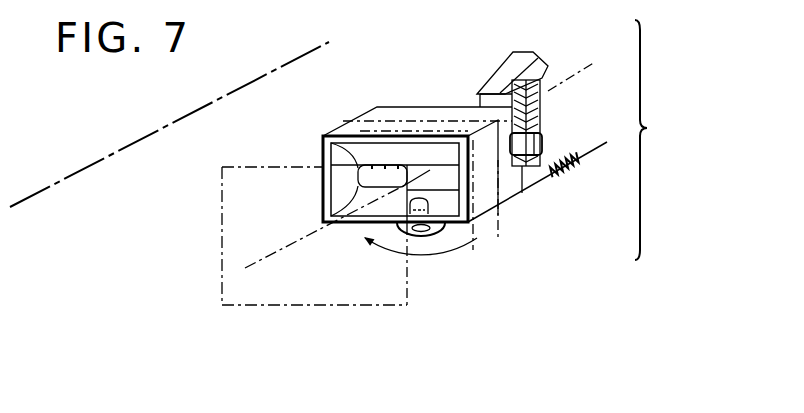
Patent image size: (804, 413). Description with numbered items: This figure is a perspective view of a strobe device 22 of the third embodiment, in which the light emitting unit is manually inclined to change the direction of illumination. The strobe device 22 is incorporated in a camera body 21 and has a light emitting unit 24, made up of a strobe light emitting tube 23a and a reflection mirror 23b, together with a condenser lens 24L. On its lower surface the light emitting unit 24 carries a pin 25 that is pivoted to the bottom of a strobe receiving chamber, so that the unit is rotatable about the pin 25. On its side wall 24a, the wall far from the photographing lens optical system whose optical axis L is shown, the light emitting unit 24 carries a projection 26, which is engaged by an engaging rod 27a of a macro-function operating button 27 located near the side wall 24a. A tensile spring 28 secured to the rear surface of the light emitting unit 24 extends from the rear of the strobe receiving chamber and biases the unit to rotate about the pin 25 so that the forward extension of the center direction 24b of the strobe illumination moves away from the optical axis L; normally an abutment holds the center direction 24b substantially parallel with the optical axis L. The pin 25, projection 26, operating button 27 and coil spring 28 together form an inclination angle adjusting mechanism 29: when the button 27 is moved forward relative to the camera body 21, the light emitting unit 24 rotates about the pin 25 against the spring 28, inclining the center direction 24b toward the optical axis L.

The optical axis L is at (35, 195).
The camera body 21 is at (500, 217).
The strobe device 22 is at (427, 72).
The strobe light emitting tube 23a is at (372, 182).
The reflection mirror 23b is at (323, 187).
The light emitting unit 24 is at (377, 108).
The side wall 24a is at (483, 205).
The center direction of the strobe illumination 24b is at (314, 237).
The condenser lens 24L is at (338, 307).
The pin 25 is at (420, 237).
The projection 26 is at (535, 133).
The macro-function operating button 27 is at (537, 66).
The engaging rod 27a is at (541, 108).
The tensile spring 28 is at (578, 163).
The inclination angle adjusting mechanism 29 is at (586, 130).